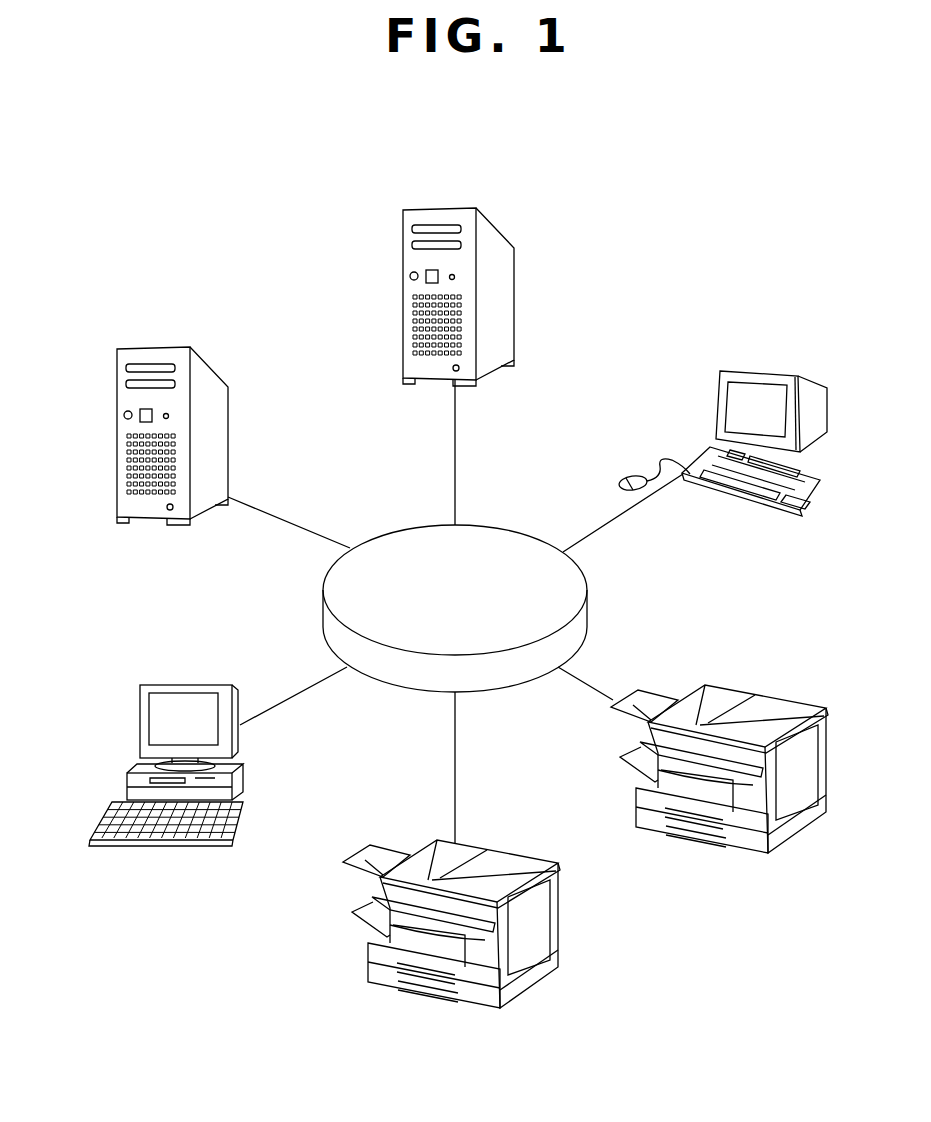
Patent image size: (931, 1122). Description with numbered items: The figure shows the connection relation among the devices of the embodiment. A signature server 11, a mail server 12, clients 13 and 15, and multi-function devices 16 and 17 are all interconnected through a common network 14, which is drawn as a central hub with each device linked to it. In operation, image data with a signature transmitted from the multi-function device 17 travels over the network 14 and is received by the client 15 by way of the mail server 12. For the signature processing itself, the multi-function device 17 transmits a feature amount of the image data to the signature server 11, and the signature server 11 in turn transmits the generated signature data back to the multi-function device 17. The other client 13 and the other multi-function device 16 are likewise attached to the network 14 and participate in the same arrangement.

The signature server 11 is at (174, 307).
The mail server 12 is at (462, 168).
The client 13 is at (159, 846).
The network 14 is at (588, 600).
The client 15 is at (779, 372).
The multi-function device 16 is at (470, 1010).
The multi-function device 17 is at (737, 851).